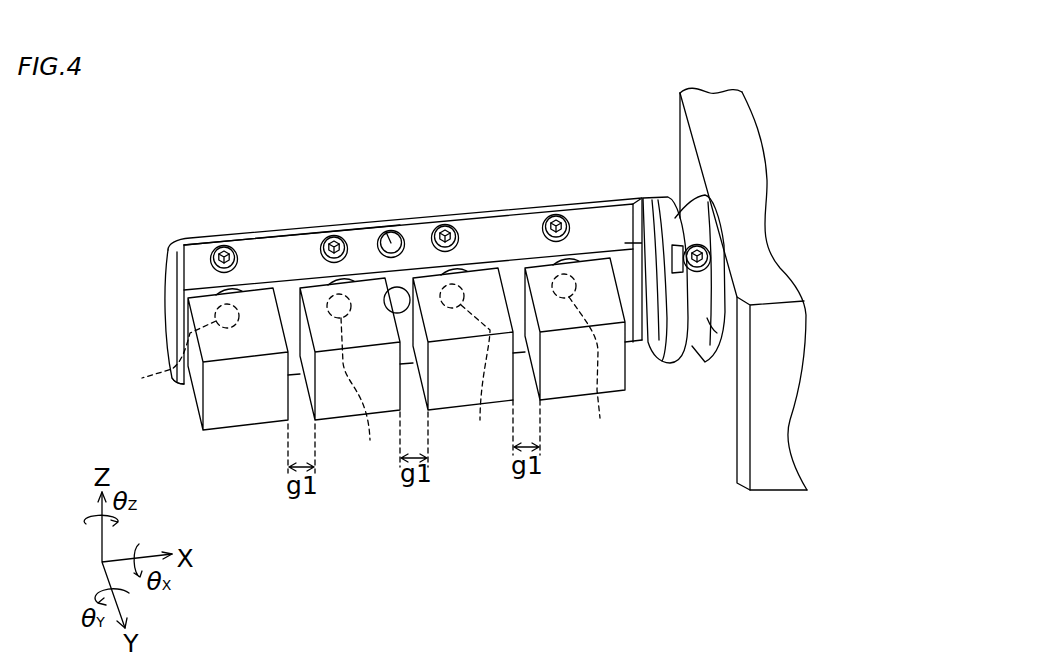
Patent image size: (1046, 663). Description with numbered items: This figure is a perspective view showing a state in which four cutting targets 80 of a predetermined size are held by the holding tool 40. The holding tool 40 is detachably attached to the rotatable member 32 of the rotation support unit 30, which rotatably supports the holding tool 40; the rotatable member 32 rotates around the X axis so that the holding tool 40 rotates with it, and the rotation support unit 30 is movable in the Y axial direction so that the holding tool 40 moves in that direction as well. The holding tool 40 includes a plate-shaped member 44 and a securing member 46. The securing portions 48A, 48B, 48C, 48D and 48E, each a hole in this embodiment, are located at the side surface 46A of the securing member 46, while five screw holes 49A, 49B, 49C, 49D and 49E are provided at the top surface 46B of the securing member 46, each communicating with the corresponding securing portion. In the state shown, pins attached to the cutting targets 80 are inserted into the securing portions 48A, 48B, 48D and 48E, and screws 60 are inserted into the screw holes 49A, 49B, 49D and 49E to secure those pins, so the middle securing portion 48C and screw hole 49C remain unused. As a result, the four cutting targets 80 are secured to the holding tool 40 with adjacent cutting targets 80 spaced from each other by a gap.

The rotation support unit 30 is at (737, 168).
The rotatable member 32 is at (720, 336).
The holding tool 40 is at (145, 310).
The plate-shaped member 44 is at (677, 345).
The securing member 46 is at (163, 283).
The side surface 46A is at (184, 385).
The top surface 46B is at (190, 258).
The securing portion 48A is at (590, 360).
The securing portion 48B is at (471, 366).
The securing portion 48C is at (401, 313).
The securing portion 48D is at (361, 381).
The securing portion 48E is at (166, 348).
The screw hole 49A is at (568, 232).
The screw hole 49B is at (458, 243).
The screw hole 49C is at (391, 229).
The screw hole 49D is at (346, 255).
The screw hole 49E is at (236, 263).
The screw 60 is at (217, 249).
The cutting target 80 is at (235, 422).